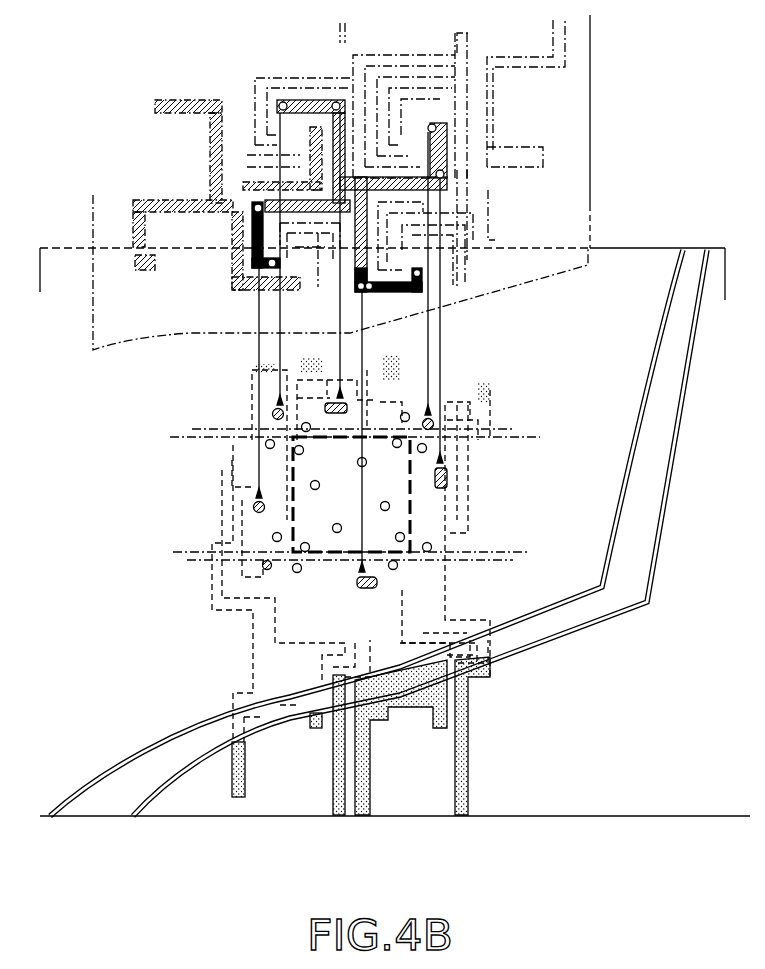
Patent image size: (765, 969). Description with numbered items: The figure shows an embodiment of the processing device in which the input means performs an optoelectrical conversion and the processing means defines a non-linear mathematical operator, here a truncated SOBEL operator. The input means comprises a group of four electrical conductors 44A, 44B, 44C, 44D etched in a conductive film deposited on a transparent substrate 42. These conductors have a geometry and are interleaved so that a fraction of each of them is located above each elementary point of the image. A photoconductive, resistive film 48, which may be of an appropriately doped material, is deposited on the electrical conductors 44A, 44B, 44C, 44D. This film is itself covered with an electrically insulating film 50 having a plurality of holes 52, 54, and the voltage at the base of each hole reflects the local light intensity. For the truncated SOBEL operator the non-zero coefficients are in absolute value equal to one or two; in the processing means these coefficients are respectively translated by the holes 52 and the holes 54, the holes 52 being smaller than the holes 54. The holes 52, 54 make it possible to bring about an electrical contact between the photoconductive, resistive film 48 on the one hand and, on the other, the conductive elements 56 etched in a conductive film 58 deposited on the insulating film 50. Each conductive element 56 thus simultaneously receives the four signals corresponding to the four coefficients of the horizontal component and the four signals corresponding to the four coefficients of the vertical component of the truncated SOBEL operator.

The transparent substrate 42 is at (395, 792).
The electrical conductor 44A is at (236, 797).
The electrical conductor 44B is at (338, 815).
The electrical conductor 44C is at (360, 815).
The electrical conductor 44D is at (465, 795).
The photoconductive, resistive film 48 is at (600, 607).
The electrically insulating film 50 is at (382, 272).
The hole 52 is at (260, 443).
The hole 54 is at (255, 509).
The conductive element 56 is at (457, 142).
The conductive film 58 is at (592, 178).